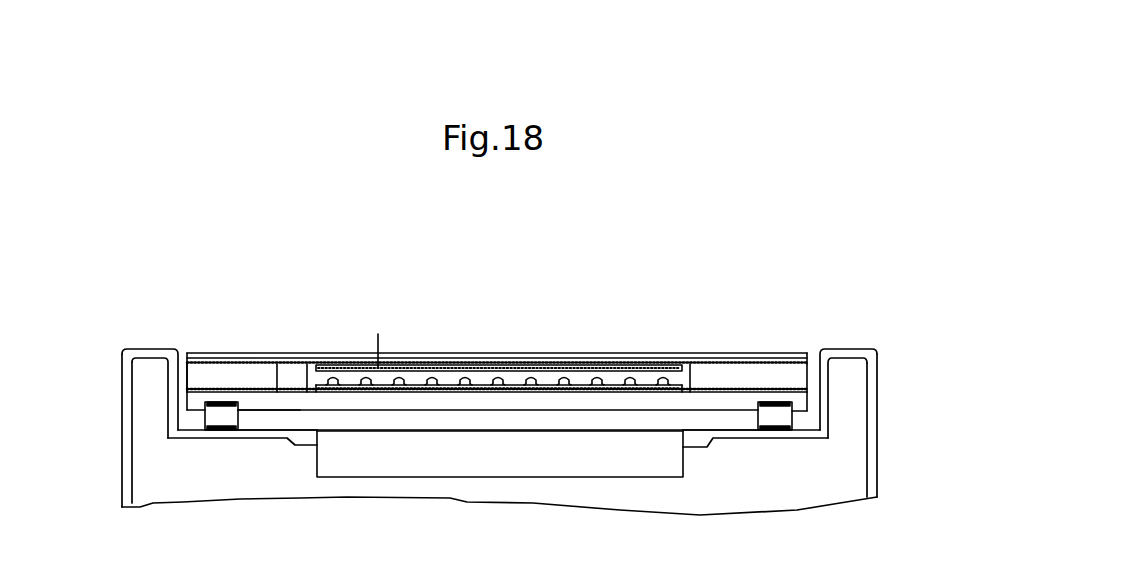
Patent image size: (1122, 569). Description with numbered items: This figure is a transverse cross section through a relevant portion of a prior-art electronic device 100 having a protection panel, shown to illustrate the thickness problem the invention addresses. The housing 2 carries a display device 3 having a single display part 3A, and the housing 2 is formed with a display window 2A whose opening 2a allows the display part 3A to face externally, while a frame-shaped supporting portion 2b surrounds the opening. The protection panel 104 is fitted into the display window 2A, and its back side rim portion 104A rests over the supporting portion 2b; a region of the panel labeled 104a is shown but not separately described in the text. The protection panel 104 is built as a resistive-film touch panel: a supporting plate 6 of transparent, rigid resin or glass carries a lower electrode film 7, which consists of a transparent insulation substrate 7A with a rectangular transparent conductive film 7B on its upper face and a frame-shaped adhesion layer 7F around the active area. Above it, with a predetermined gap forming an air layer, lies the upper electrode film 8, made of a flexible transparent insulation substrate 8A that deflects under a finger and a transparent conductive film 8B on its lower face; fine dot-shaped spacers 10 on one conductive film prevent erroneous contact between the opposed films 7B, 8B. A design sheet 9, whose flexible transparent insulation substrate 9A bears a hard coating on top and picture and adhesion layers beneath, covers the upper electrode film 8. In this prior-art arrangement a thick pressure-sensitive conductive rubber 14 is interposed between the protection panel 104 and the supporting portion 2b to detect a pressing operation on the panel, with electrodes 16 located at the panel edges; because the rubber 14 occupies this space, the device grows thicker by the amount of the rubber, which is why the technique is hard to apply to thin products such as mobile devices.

The semiconductor device 100 is at (207, 272).
The housing 2 is at (850, 354).
The display window 2A is at (183, 352).
The opening 2a is at (322, 436).
The supporting portion 2b is at (220, 440).
The display device 3 is at (535, 478).
The display part 3A is at (443, 424).
The supporting plate 6 is at (547, 412).
The lower electrode film 7 is at (605, 397).
The transparent insulation substrate 7A is at (283, 368).
The transparent conductive film 7B is at (346, 368).
The adhesion layer 7F is at (245, 372).
The upper electrode film 8 is at (593, 360).
The flexible transparent insulation substrate 8A is at (688, 352).
The transparent conductive film 8B is at (647, 397).
The flexible transparent insulation substrate 9A is at (405, 365).
The design sheet 9 is at (499, 340).
The dot-shaped spacer 10 is at (562, 378).
The pressure-sensitive conductive rubber 14 is at (203, 418).
The comb-like electrodes 16 is at (782, 400).
The protection panel 104 is at (383, 352).
The module electrode 104a is at (237, 428).
The back side rim portion 104A is at (258, 412).